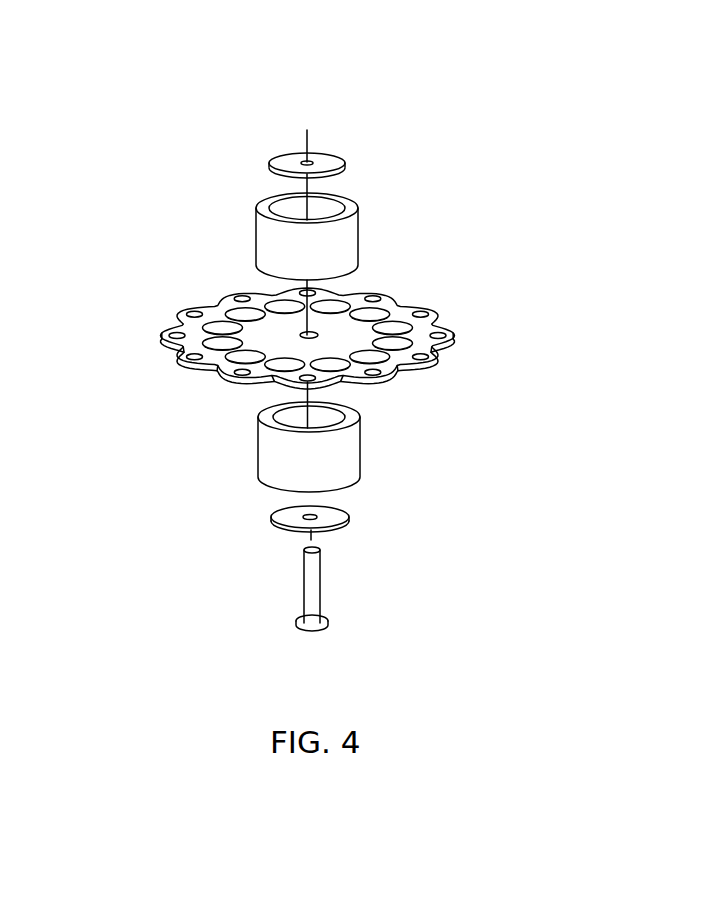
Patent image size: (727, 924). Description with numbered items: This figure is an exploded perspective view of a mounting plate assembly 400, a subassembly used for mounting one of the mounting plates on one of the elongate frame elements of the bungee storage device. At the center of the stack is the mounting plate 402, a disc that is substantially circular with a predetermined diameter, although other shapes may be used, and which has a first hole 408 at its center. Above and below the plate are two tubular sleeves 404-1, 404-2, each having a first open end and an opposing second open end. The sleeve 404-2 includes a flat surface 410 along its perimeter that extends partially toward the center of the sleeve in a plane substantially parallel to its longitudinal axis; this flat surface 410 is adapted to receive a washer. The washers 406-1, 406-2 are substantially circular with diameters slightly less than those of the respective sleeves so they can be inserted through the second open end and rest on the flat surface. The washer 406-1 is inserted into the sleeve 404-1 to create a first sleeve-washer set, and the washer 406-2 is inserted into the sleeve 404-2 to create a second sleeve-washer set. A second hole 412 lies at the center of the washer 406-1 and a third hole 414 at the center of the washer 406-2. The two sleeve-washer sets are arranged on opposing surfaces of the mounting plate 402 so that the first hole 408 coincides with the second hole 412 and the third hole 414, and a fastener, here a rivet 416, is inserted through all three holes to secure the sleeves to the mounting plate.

The mounting plate assembly 400 is at (303, 79).
The mounting plate 402 is at (178, 317).
The tubular sleeve 404-1 is at (363, 240).
The tubular sleeve 404-2 is at (362, 467).
The washer 406-1 is at (332, 150).
The washer 406-2 is at (346, 508).
The first hole 408 is at (317, 333).
The flat surface 410 is at (260, 419).
The second hole 412 is at (303, 160).
The third hole 414 is at (304, 516).
The rivet 416 is at (318, 587).